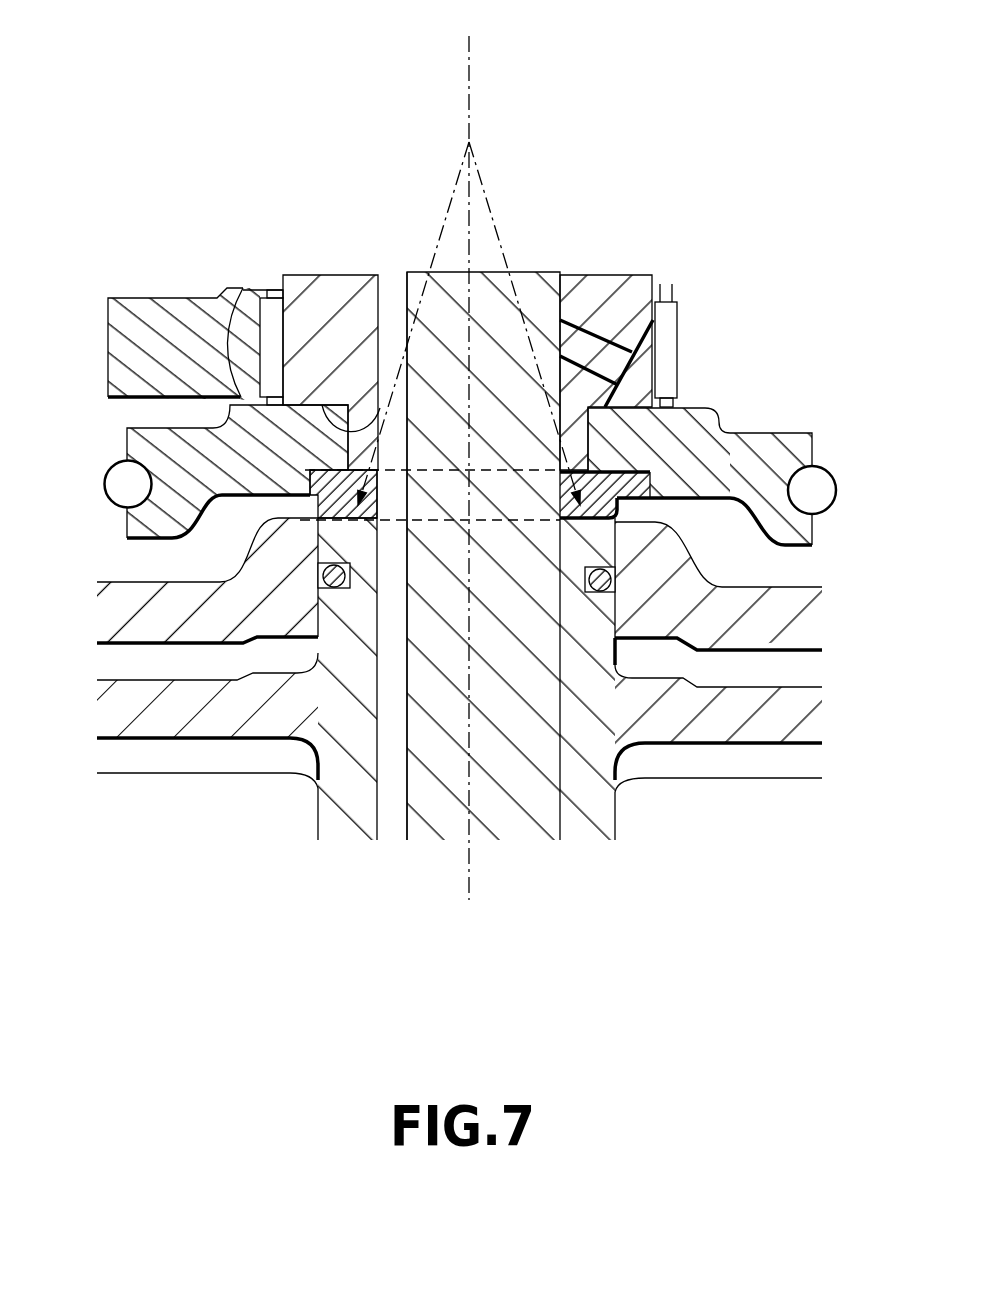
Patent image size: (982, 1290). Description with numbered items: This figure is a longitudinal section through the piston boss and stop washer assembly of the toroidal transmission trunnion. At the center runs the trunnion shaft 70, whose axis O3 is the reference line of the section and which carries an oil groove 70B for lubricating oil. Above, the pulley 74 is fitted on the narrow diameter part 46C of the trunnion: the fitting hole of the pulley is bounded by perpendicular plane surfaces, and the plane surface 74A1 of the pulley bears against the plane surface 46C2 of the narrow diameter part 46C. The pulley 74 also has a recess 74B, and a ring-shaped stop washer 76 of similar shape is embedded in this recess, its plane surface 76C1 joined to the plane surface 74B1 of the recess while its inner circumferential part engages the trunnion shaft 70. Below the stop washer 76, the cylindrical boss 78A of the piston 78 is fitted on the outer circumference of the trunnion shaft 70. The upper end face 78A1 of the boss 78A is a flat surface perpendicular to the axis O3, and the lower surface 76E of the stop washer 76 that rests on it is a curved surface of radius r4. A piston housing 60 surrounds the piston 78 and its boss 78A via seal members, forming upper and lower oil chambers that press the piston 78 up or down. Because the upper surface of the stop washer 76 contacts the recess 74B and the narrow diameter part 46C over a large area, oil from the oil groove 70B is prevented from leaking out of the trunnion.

The axis of the trunnion shaft O3 is at (473, 450).
The radius of the curved lower surface r4 is at (469, 323).
The trunnion shaft 70 is at (498, 790).
The oil groove 70B is at (422, 766).
The narrow diameter part 46C is at (678, 362).
The plane surface of the narrow diameter part 46C2 is at (322, 462).
The pulley 74 is at (783, 460).
The plane surface of the fitting hole 74A1 is at (379, 462).
The recess 74B is at (590, 466).
The plane surface of the recess 74B1 is at (262, 398).
The stop washer 76 is at (650, 488).
The plane surface of the stop washer 76C1 is at (308, 482).
The lower surface of the stop washer 76E is at (565, 472).
The piston 78 is at (148, 720).
The cylindrical boss 78A is at (340, 718).
The upper end face of the boss 78A1 is at (325, 468).
The piston housing 60 is at (118, 586).